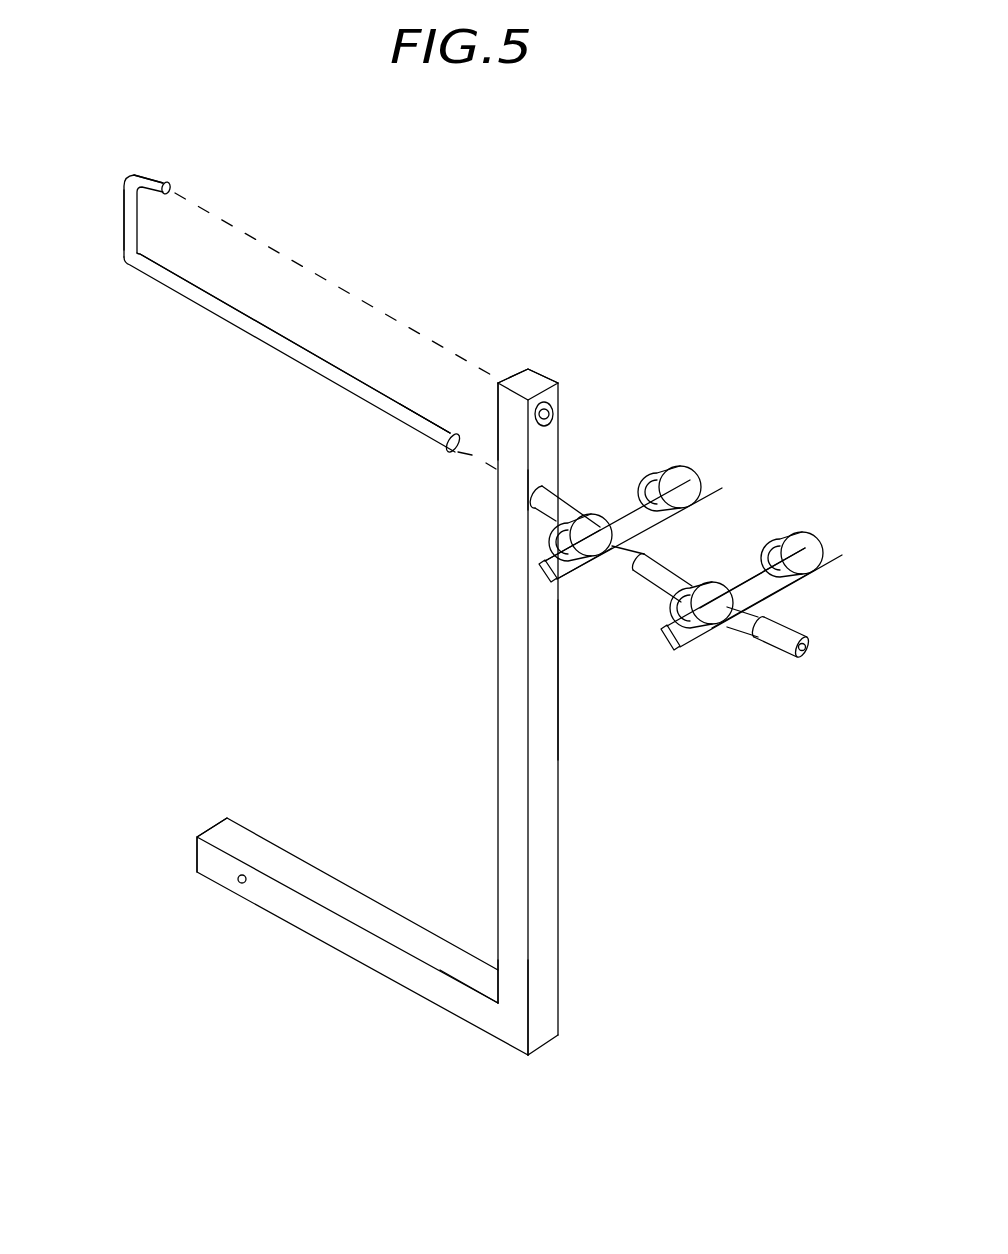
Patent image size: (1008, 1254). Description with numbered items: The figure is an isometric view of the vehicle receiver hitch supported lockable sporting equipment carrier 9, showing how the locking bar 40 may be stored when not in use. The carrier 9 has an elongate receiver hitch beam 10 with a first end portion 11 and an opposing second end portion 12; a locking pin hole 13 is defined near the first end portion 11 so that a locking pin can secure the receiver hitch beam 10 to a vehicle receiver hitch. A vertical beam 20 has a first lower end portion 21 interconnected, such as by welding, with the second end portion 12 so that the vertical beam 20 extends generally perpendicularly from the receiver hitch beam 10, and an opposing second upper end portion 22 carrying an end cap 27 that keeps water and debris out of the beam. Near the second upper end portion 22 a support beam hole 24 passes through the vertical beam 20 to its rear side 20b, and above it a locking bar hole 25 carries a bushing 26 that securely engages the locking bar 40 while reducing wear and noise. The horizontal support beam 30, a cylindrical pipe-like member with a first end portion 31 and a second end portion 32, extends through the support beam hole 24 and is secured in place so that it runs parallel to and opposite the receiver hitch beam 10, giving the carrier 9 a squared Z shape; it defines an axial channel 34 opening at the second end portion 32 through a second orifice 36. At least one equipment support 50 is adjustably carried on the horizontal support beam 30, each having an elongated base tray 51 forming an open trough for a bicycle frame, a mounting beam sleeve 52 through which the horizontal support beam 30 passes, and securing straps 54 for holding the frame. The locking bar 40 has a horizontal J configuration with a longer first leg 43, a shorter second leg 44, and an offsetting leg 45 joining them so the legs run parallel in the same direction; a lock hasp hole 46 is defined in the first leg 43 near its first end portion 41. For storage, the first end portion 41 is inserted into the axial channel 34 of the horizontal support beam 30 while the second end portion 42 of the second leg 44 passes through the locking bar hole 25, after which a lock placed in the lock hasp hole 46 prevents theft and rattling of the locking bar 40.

The vehicle receiver hitch supported lockable sporting equipment carrier 9 is at (509, 300).
The receiver hitch beam 10 is at (372, 990).
The first end portion 11 is at (228, 836).
The second end portion 12 is at (470, 1000).
The locking pin hole 13 is at (238, 877).
The vertical beam 20 is at (585, 808).
The rear side 20b is at (540, 672).
The first lower end portion 21 is at (512, 973).
The second upper end portion 22 is at (512, 433).
The support beam hole 24 is at (537, 498).
The locking bar hole 25 is at (556, 411).
The bushing 26 is at (550, 420).
The end cap 27 is at (530, 377).
The horizontal support beam 30 is at (641, 596).
The first end portion 31 is at (553, 502).
The second end portion 32 is at (790, 660).
The axial channel 34 is at (812, 650).
The second orifice 36 is at (800, 658).
The locking bar 40 is at (200, 338).
The first end portion 41 is at (458, 453).
The second end portion 42 is at (168, 192).
The first leg 43 is at (282, 345).
The second leg 44 is at (157, 177).
The offsetting leg 45 is at (127, 216).
The lock hasp hole 46 is at (432, 441).
The equipment support 50 is at (697, 448).
The base tray 51 is at (557, 575).
The mounting beam sleeve 52 is at (612, 556).
The securing straps 54 is at (552, 543).